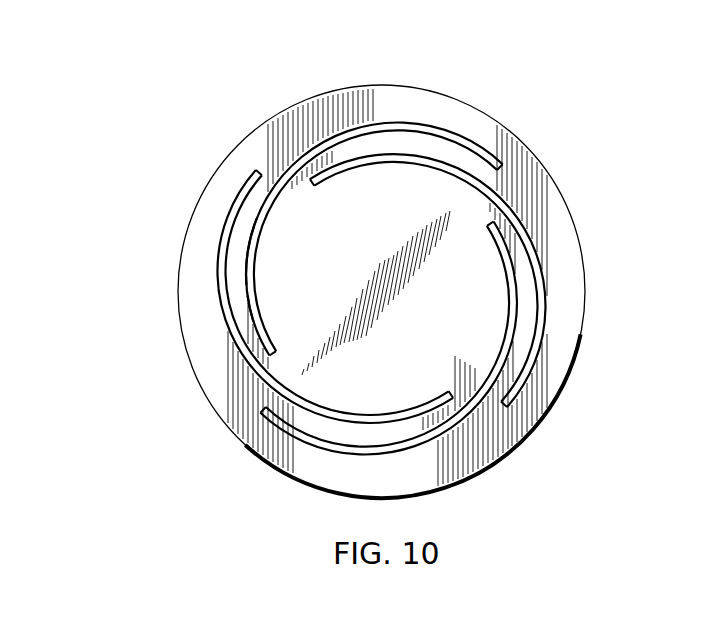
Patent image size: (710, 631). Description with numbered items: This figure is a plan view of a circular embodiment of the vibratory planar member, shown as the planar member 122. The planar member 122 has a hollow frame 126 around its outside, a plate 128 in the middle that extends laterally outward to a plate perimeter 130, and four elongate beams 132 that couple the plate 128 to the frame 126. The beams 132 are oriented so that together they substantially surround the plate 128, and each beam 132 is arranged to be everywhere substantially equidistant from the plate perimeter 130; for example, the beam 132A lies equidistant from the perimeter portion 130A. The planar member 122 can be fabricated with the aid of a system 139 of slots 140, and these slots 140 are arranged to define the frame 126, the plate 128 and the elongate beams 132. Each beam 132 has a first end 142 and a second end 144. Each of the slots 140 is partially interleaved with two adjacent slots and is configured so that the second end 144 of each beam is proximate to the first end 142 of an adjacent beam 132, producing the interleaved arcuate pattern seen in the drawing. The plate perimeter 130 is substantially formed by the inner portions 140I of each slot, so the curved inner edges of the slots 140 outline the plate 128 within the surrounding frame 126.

The planar member 122 is at (541, 147).
The hollow frame 126 is at (488, 142).
The plate 128 is at (427, 214).
The plate perimeter 130 is at (496, 248).
The elongate beams 132 is at (536, 267).
The system of slots 139 is at (221, 211).
The slots 140 is at (245, 291).
The perimeter portion 130A is at (248, 285).
The beam 132A is at (255, 234).
The inner portions of slots 140I is at (248, 312).
The first end 142 is at (496, 397).
The second end 144 is at (437, 413).